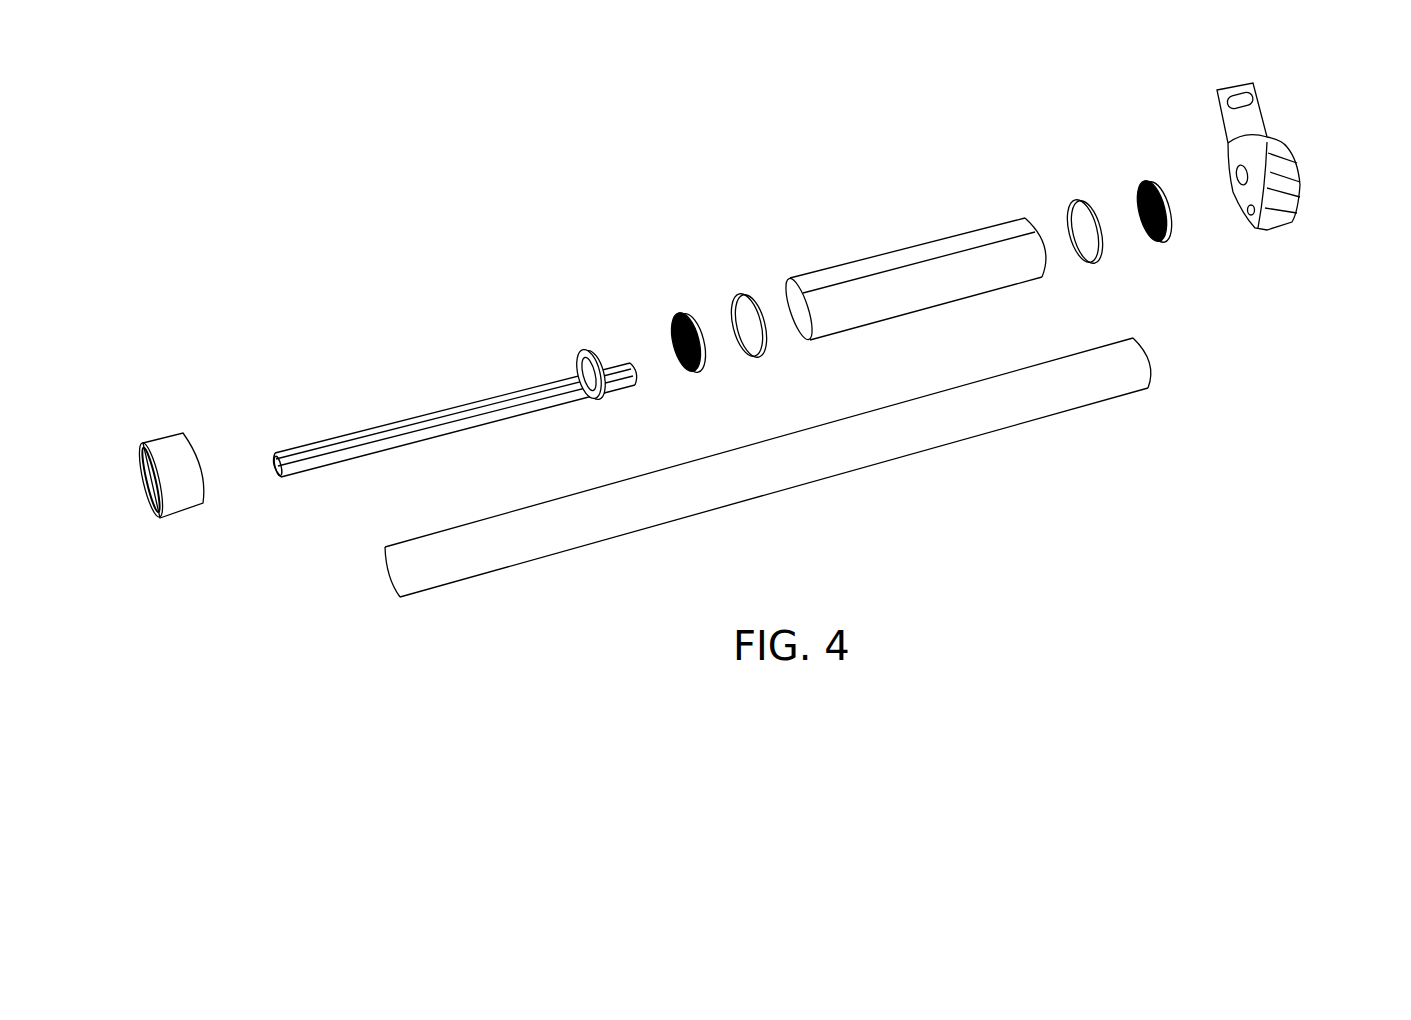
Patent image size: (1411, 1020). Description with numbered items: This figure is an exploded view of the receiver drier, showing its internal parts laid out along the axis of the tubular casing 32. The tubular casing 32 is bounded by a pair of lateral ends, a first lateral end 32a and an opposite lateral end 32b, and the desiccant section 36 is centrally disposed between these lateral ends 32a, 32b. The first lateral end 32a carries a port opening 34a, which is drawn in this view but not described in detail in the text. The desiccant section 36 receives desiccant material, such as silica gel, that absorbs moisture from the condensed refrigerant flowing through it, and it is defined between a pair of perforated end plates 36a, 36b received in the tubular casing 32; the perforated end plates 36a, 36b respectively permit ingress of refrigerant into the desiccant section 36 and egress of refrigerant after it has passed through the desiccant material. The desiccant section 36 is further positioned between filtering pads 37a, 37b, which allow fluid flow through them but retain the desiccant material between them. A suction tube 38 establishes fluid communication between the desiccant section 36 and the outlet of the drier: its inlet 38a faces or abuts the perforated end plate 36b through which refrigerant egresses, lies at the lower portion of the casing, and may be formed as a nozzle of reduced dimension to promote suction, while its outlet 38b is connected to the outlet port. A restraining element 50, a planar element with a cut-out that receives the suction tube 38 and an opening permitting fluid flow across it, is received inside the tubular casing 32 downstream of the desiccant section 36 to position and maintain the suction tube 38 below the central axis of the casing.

The tubular casing 32 is at (1118, 380).
The first lateral end 32a is at (1241, 156).
The lateral end 32b is at (142, 445).
The hole 34a is at (1242, 170).
The desiccant section 36 is at (938, 250).
The perforated end plate 36a is at (1172, 233).
The perforated end plate 36b is at (680, 327).
The filtering pad 37a is at (1077, 207).
The filtering pad 37b is at (740, 300).
The suction tube 38 is at (486, 422).
The inlet 38a is at (627, 380).
The outlet 38b is at (285, 462).
The restraining element 50 is at (578, 332).